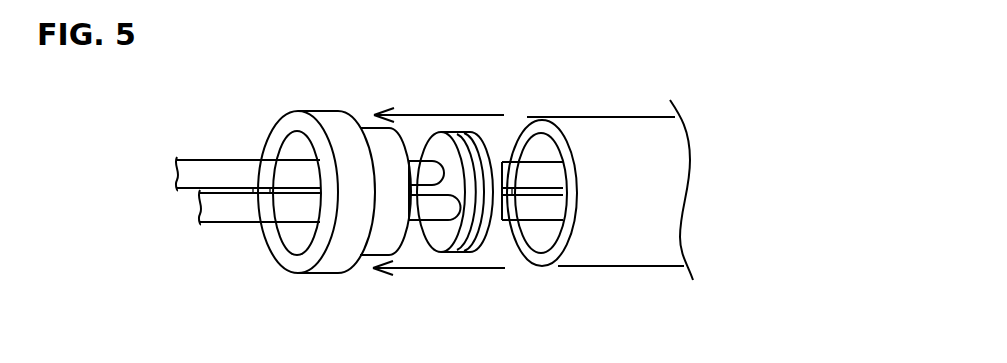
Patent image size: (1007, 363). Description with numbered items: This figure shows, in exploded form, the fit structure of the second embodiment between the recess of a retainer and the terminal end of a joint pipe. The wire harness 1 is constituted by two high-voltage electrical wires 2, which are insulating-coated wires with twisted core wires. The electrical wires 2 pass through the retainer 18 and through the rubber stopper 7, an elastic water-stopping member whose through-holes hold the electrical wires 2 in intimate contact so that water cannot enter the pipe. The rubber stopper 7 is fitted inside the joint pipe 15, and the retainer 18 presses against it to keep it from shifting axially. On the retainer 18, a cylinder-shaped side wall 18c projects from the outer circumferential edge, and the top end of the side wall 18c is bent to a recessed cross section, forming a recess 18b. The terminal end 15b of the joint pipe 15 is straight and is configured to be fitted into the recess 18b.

The wire harness 1 is at (248, 249).
The high-voltage electrical wire 2 is at (230, 175).
The rubber stopper 7 is at (442, 145).
The joint pipe 15 is at (605, 113).
The terminal end of joint pipe 15b is at (560, 145).
The retainer 18 is at (304, 151).
The recess 18b is at (333, 124).
The side wall 18c is at (294, 139).